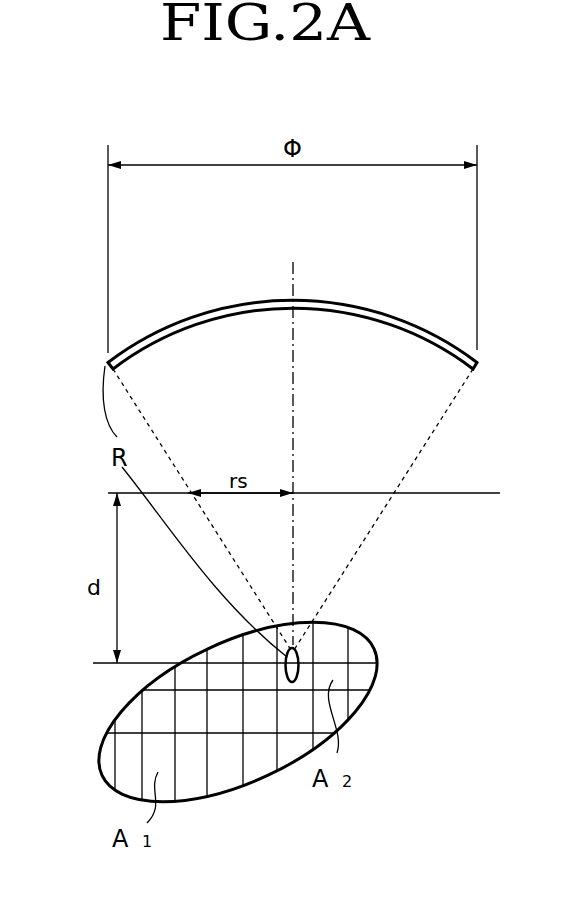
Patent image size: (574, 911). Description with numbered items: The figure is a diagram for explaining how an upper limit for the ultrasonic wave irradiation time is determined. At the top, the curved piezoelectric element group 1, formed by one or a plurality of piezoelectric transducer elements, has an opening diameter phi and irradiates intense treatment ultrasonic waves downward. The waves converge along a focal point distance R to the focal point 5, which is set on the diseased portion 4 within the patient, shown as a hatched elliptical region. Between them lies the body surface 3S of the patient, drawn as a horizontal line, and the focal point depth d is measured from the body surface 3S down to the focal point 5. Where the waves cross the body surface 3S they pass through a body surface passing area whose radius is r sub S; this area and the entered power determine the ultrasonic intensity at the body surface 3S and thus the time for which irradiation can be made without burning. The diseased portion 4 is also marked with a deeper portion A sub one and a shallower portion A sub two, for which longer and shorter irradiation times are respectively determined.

The piezoelectric element group 1 is at (395, 312).
The body surface 3S is at (330, 493).
The diseased portion 4 is at (120, 710).
The focal point 5 is at (300, 663).